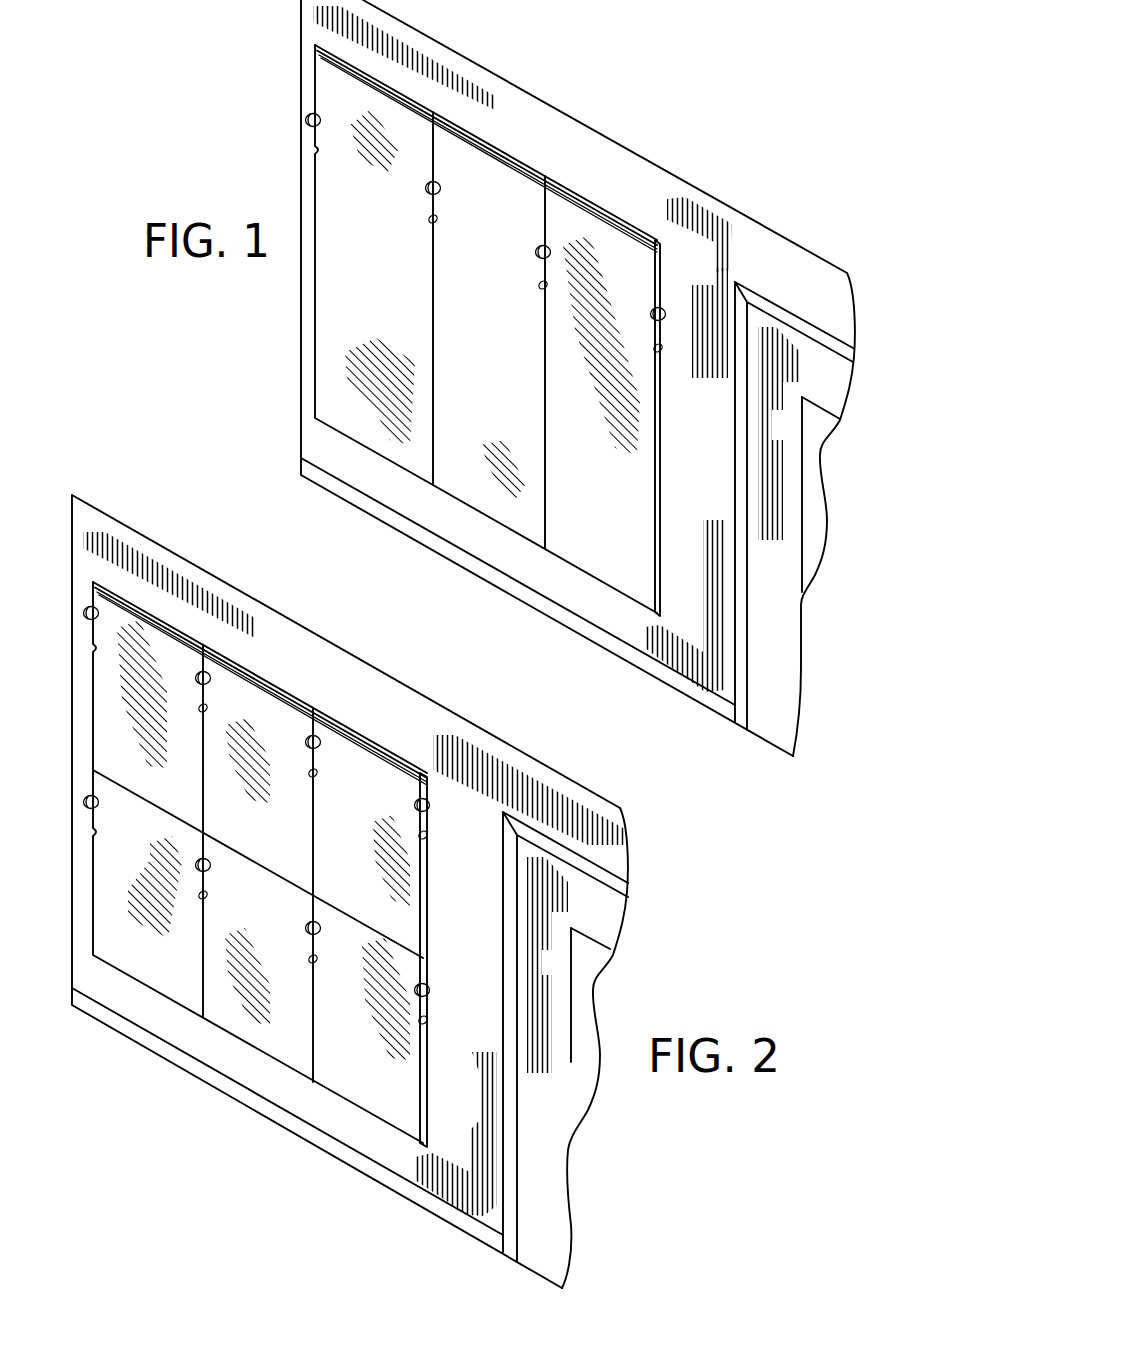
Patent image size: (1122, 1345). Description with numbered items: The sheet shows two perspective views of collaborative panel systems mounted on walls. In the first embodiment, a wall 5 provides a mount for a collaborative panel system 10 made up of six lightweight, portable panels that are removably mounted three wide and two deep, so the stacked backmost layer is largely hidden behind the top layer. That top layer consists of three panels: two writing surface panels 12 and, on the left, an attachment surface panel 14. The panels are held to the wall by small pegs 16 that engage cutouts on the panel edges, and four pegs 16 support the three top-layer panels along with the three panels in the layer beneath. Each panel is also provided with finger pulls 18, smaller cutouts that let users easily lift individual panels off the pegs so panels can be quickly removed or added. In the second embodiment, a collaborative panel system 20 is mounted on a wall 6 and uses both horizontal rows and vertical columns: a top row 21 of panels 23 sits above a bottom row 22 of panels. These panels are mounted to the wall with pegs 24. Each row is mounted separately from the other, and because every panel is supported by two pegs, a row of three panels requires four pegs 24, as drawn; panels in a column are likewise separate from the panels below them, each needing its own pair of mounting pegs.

In FIG. 1, the wall 5 is at (626, 194).
In FIG. 2, the wall 6 is at (364, 704).
In FIG. 1, the collaborative panel system 10 is at (729, 87).
In FIG. 1, the writing surface panel 12 is at (505, 414).
In FIG. 1, the attachment surface panel 14 is at (392, 301).
In FIG. 1, the peg 16 is at (306, 106).
In FIG. 1, the finger pull 18 is at (304, 156).
In FIG. 2, the collaborative panel system 20 is at (441, 1093).
In FIG. 2, the top row 21 is at (441, 882).
In FIG. 2, the bottom row 22 is at (442, 1033).
In FIG. 2, the panel 23 is at (368, 839).
In FIG. 2, the peg 24 is at (432, 990).